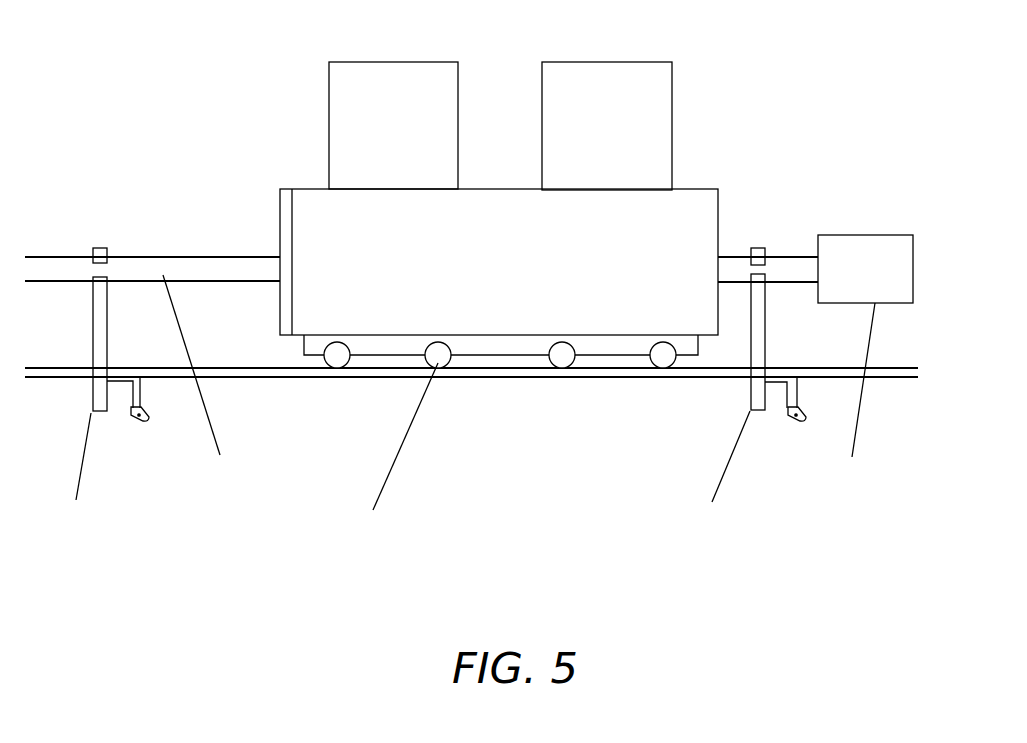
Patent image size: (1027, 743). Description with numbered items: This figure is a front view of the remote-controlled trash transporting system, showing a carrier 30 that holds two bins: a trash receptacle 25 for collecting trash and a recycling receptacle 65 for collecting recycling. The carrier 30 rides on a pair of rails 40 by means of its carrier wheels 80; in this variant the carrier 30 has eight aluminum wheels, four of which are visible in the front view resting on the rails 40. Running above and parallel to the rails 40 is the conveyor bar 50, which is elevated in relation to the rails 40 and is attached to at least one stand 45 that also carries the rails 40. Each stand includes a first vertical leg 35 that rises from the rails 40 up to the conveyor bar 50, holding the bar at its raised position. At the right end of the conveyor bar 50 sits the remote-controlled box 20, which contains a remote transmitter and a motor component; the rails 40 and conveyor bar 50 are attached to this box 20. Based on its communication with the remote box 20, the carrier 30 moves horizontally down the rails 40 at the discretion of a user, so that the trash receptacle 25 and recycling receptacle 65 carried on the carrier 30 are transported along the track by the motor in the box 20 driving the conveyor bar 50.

The remote-controlled box 20 is at (869, 225).
The trash receptacle 25 is at (321, 113).
The carrier 30 is at (500, 313).
The first vertical leg 35 is at (110, 297).
The pair of rails 40 is at (278, 384).
The stand for rails 45 is at (109, 425).
The conveyor bar 50 is at (216, 246).
The recycling receptacle 65 is at (681, 99).
The carrier wheels 80 is at (575, 368).